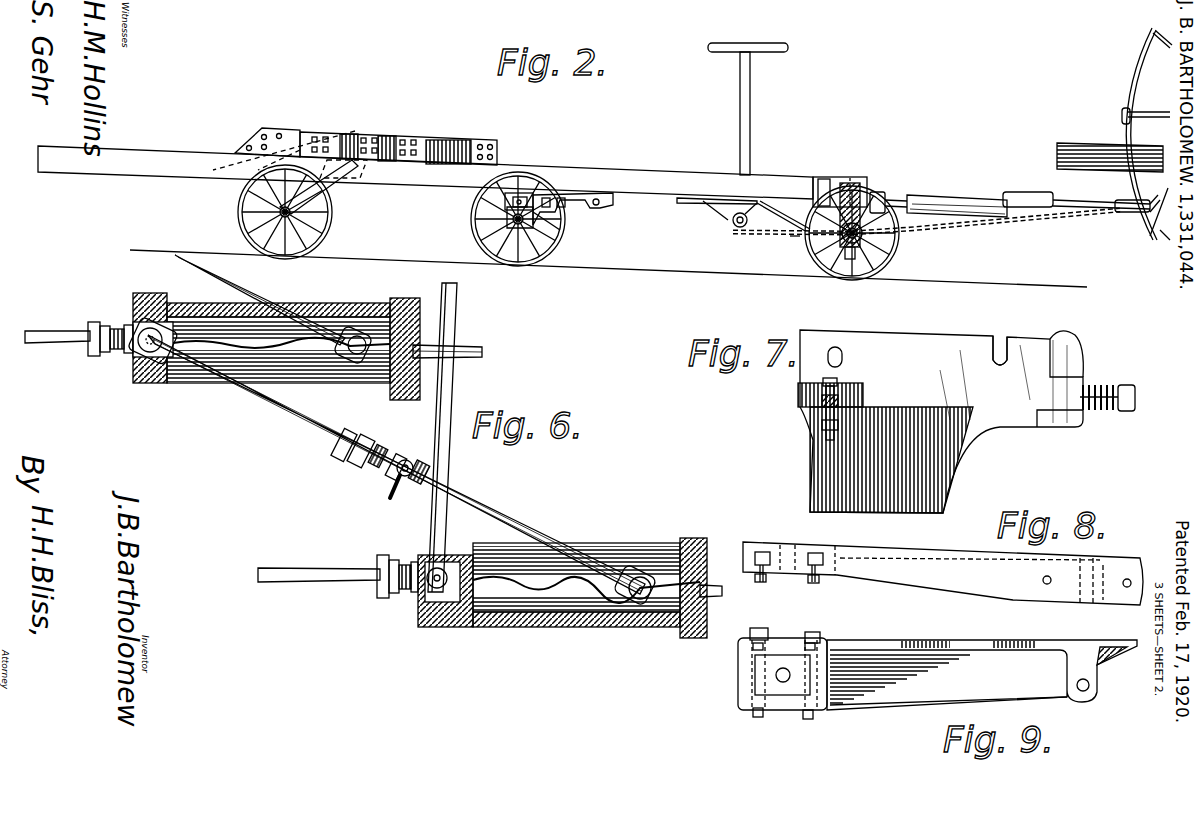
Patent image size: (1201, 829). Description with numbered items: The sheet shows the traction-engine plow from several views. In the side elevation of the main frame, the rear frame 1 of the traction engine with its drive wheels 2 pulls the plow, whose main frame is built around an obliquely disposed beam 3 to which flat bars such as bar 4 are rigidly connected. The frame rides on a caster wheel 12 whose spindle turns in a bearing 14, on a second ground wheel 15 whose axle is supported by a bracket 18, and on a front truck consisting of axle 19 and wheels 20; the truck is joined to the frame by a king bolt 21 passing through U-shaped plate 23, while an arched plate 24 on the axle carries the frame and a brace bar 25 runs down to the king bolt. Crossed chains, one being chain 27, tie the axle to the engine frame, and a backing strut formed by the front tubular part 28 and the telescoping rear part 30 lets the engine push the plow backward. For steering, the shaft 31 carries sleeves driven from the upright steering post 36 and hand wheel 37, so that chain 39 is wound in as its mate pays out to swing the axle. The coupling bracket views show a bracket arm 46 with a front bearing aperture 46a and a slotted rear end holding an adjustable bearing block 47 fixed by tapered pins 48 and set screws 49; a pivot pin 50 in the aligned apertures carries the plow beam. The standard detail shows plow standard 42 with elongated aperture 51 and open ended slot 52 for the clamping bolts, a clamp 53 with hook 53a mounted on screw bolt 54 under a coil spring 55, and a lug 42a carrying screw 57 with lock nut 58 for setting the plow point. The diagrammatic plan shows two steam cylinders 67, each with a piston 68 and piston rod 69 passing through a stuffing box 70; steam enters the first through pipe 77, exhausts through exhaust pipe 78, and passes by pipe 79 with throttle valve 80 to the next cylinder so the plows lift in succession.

In FIG. 2, the frame of a traction engine 1 is at (1072, 143).
In FIG. 2, the drive wheels 2 is at (1126, 96).
In FIG. 2, the beam 3 is at (425, 172).
In FIG. 2, the bar 4 is at (440, 138).
In FIG. 2, the caster wheel 12 is at (333, 216).
In FIG. 2, the bearing 14 is at (369, 123).
In FIG. 2, the second ground wheel 15 is at (478, 230).
In FIG. 2, the bracket 18 is at (545, 226).
In FIG. 2, the axle 19 is at (880, 247).
In FIG. 2, the wheels 20 is at (880, 240).
In FIG. 2, the king bolt 21 is at (853, 260).
In FIG. 2, the U-shaped plate 23 is at (855, 178).
In FIG. 2, the arched plate 24 is at (765, 200).
In FIG. 2, the brace bar 25 is at (785, 233).
In FIG. 2, the crossed chain 27 is at (1012, 226).
In FIG. 2, the front tubular part 28 is at (958, 198).
In FIG. 2, the rear part 30 is at (887, 195).
In FIG. 2, the shaft 31 is at (737, 229).
In FIG. 2, the steering post 36 is at (752, 108).
In FIG. 2, the hand wheel 37 is at (770, 54).
In FIG. 2, the chain 39 is at (795, 238).
In FIG. 7, the plow standard 42 is at (965, 470).
In FIG. 7, the lug 42a is at (800, 390).
In FIG. 2, the bracket arm 46 is at (507, 201).
In FIG. 8, the bracket arm 46 is at (945, 594).
In FIG. 9, the bracket arm 46 is at (930, 638).
In FIG. 8, the bearing aperture 46a is at (1085, 606).
In FIG. 9, the bearing aperture 46a is at (1085, 691).
In FIG. 2, the bearing block 47 is at (546, 198).
In FIG. 9, the bearing block 47 is at (785, 682).
In FIG. 8, the tapered pin 48 is at (810, 552).
In FIG. 9, the tapered pin 48 is at (812, 632).
In FIG. 8, the set screw 49 is at (800, 583).
In FIG. 9, the set screw 49 is at (818, 644).
In FIG. 2, the pivot pin 50 is at (518, 197).
In FIG. 7, the elongated aperture 51 is at (850, 355).
In FIG. 7, the open ended slot 52 is at (1000, 338).
In FIG. 7, the clamp 53 is at (1060, 430).
In FIG. 7, the hook 53a is at (1068, 336).
In FIG. 7, the screw bolt 54 is at (1115, 412).
In FIG. 7, the coil spring 55 is at (1100, 386).
In FIG. 7, the screw 57 is at (825, 422).
In FIG. 7, the lock nut 58 is at (838, 405).
In FIG. 6, the steam cylinder 67 is at (346, 384).
In FIG. 6, the piston 68 is at (167, 296).
In FIG. 6, the piston rod 69 is at (48, 331).
In FIG. 6, the stuffing box 70 is at (115, 322).
In FIG. 6, the pipe 77 is at (455, 455).
In FIG. 6, the exhaust pipe 78 is at (482, 352).
In FIG. 6, the pipe 79 is at (275, 300).
In FIG. 6, the throttle valve 80 is at (390, 487).